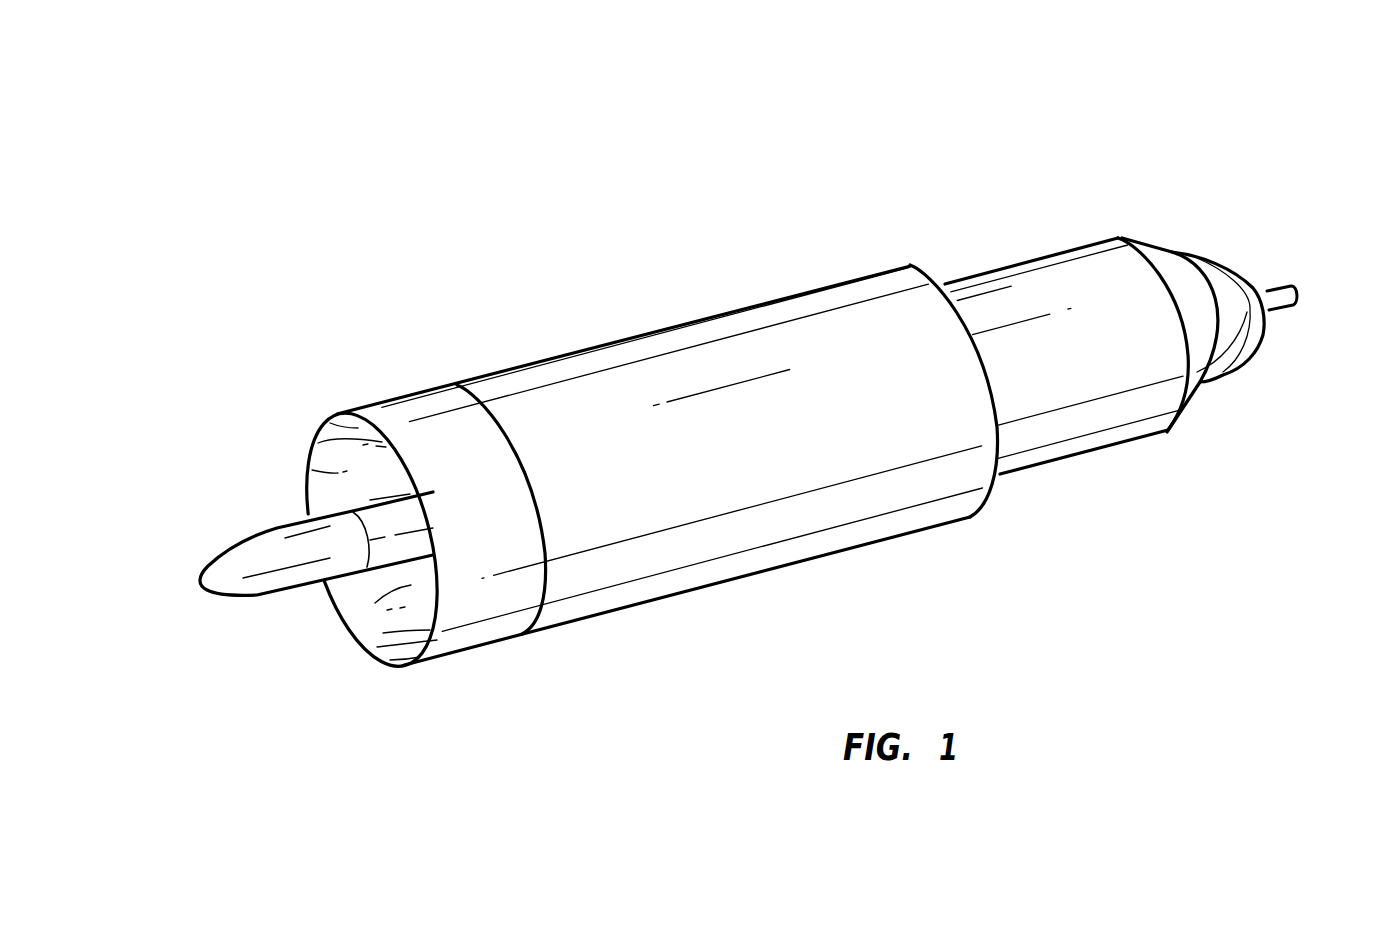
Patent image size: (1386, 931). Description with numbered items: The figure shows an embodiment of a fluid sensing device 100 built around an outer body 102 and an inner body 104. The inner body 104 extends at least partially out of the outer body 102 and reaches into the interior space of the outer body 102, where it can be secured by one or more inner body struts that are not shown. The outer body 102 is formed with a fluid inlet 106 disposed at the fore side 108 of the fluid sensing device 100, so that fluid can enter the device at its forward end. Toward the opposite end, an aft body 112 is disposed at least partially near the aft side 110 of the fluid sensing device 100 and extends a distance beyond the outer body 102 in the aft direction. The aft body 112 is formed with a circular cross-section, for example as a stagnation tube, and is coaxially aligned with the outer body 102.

The fluid sensing device 100 is at (663, 193).
The outer body 102 is at (535, 405).
The inner body 104 is at (278, 553).
The fluid inlet 106 is at (373, 592).
The fore side 108 is at (353, 413).
The aft side 110 is at (1272, 292).
The aft body 112 is at (1103, 413).